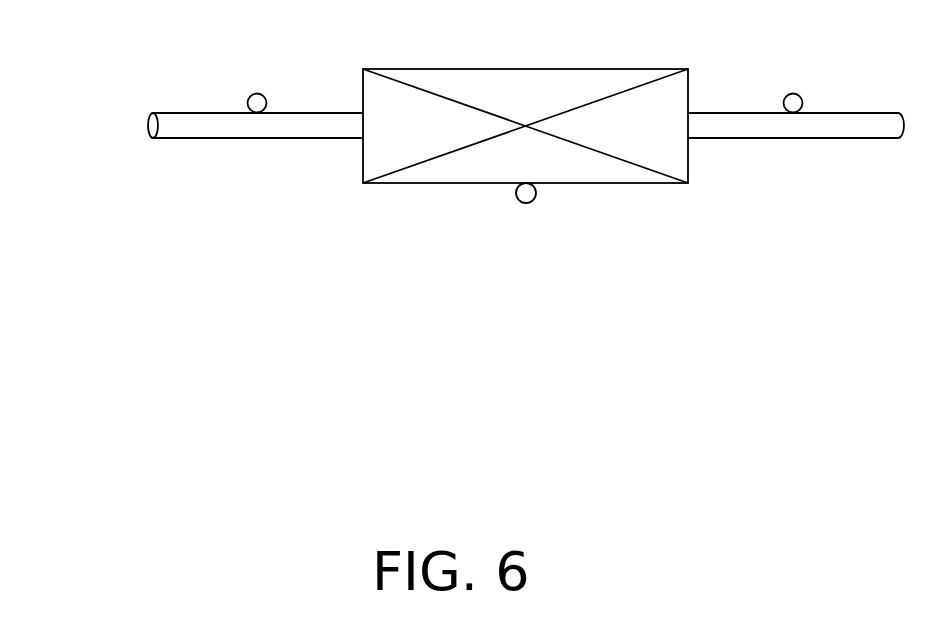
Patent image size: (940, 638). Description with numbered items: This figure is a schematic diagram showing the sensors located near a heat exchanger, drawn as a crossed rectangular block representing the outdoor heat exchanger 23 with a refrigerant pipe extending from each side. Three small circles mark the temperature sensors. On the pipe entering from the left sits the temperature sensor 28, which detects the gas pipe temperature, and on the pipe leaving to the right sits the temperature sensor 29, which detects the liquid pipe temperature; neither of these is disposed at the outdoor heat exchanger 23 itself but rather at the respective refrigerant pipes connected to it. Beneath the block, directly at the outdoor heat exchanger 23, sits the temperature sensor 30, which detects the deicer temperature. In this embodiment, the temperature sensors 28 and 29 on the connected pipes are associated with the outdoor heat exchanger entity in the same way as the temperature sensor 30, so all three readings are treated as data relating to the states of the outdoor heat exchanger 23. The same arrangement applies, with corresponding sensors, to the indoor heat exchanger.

The outdoor heat exchanger 23 is at (527, 69).
The temperature sensor 28 is at (259, 94).
The temperature sensor 29 is at (792, 94).
The temperature sensor 30 is at (519, 203).